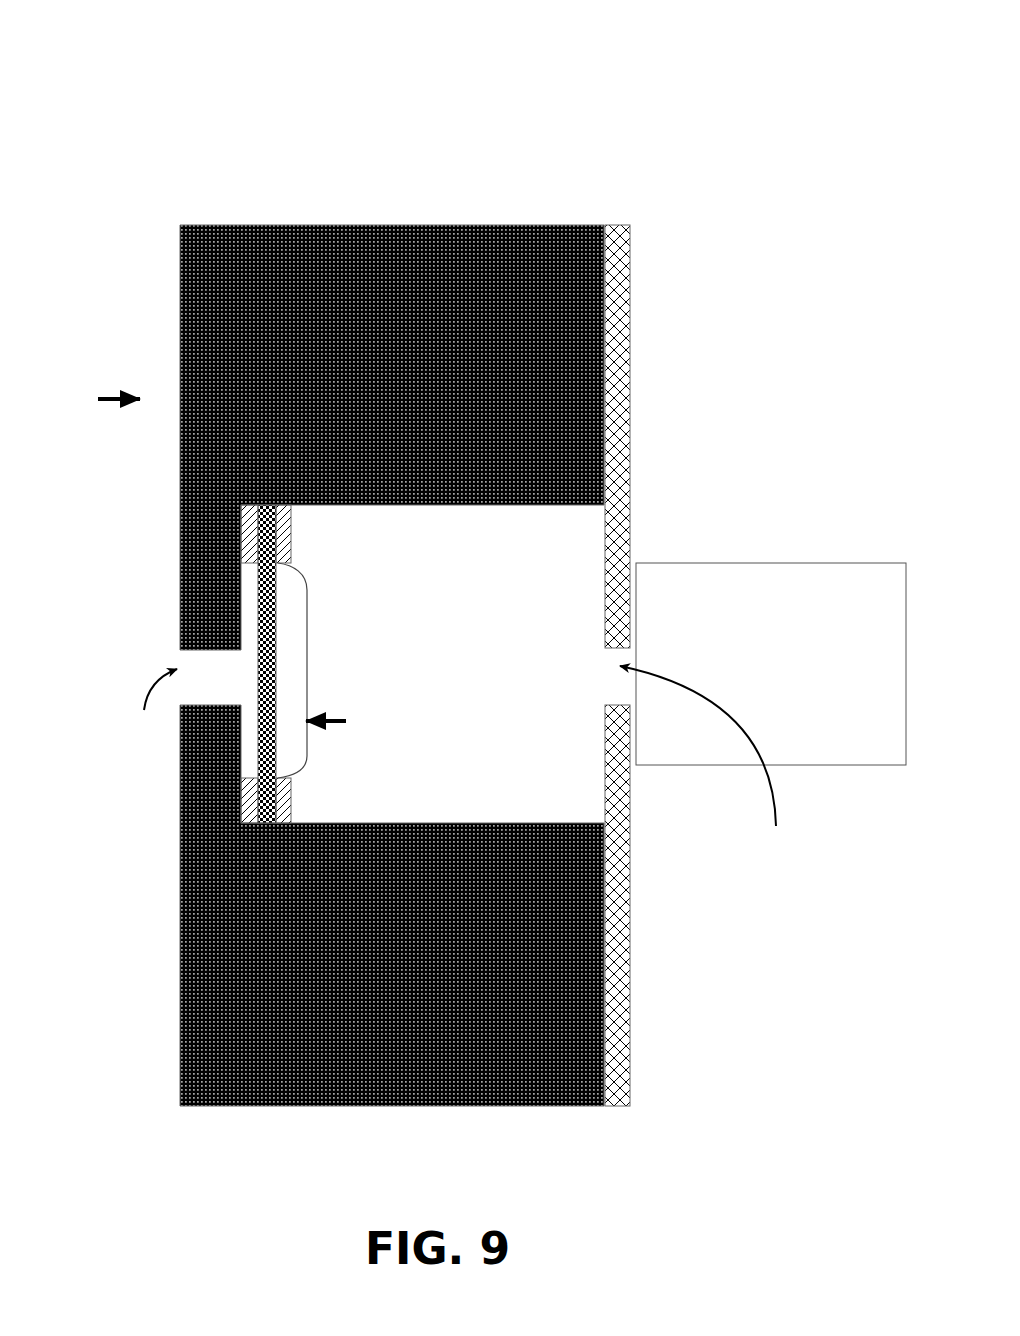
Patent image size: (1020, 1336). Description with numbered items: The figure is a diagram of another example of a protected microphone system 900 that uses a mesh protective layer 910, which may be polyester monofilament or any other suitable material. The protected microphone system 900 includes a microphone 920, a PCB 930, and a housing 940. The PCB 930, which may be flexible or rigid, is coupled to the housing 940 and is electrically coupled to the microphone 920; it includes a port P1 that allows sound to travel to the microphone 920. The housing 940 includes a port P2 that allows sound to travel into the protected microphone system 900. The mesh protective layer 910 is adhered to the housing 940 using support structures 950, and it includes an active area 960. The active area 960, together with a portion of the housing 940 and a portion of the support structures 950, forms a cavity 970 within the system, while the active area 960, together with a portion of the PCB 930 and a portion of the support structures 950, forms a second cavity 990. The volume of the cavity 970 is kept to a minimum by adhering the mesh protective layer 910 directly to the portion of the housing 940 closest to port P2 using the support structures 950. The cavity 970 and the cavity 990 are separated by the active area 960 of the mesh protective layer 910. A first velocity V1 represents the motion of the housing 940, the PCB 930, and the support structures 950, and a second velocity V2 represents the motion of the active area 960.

The protected microphone system 900 is at (108, 102).
The mesh protective layer 910 is at (270, 598).
The microphone 920 is at (765, 555).
The PCB 930 is at (607, 217).
The housing 940 is at (383, 217).
The support structures 950 is at (283, 530).
The active area 960 is at (300, 663).
The cavity 970 is at (243, 728).
The cavity 990 is at (509, 713).
The first velocity V1 is at (99, 399).
The second velocity V2 is at (345, 723).
The port P1 is at (707, 759).
The port P2 is at (156, 704).